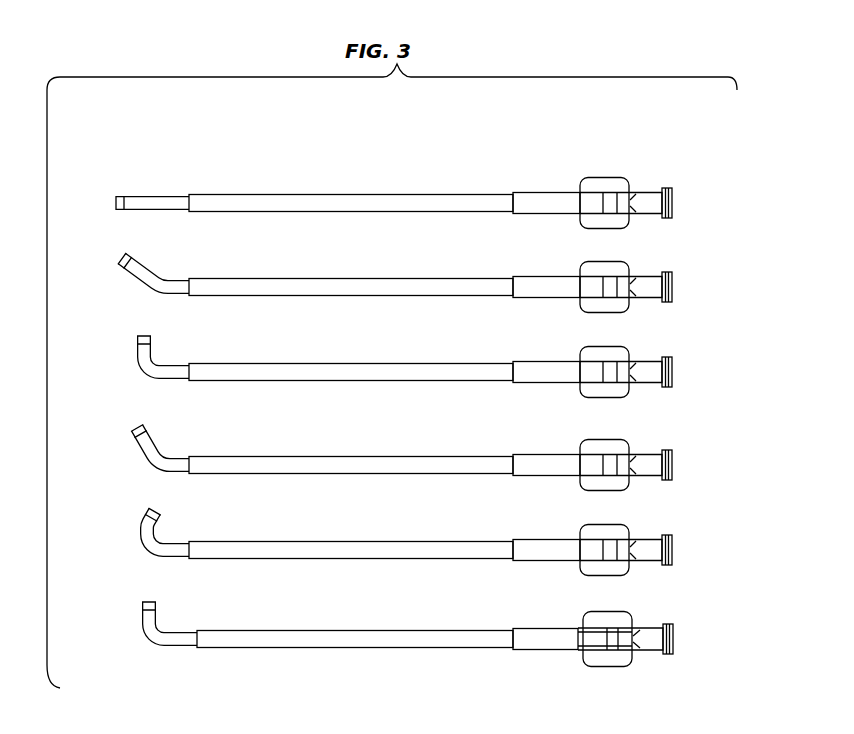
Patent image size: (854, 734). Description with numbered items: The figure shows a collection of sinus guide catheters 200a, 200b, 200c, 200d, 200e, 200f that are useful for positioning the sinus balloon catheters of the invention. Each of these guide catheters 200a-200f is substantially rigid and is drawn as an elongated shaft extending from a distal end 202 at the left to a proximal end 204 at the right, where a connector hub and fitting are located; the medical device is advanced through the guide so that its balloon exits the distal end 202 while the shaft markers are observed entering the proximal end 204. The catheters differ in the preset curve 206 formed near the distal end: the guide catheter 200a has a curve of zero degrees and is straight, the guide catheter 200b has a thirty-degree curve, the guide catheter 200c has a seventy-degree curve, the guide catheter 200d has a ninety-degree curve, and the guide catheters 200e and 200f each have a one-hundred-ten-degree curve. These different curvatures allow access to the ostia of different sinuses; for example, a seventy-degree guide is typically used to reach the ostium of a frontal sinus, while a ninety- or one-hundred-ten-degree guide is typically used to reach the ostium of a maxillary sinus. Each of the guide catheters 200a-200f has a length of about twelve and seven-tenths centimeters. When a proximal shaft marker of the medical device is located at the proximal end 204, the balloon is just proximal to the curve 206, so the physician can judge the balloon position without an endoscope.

The sinus guide catheter 200a is at (417, 181).
The sinus guide catheter 200b is at (651, 277).
The sinus guide catheter 200c is at (650, 362).
The sinus guide catheter 200d is at (650, 455).
The sinus guide catheter 200e is at (650, 540).
The sinus guide catheter 200f is at (413, 642).
The distal end 202 is at (116, 205).
The proximal end 204 is at (673, 200).
The curve 206 is at (149, 644).